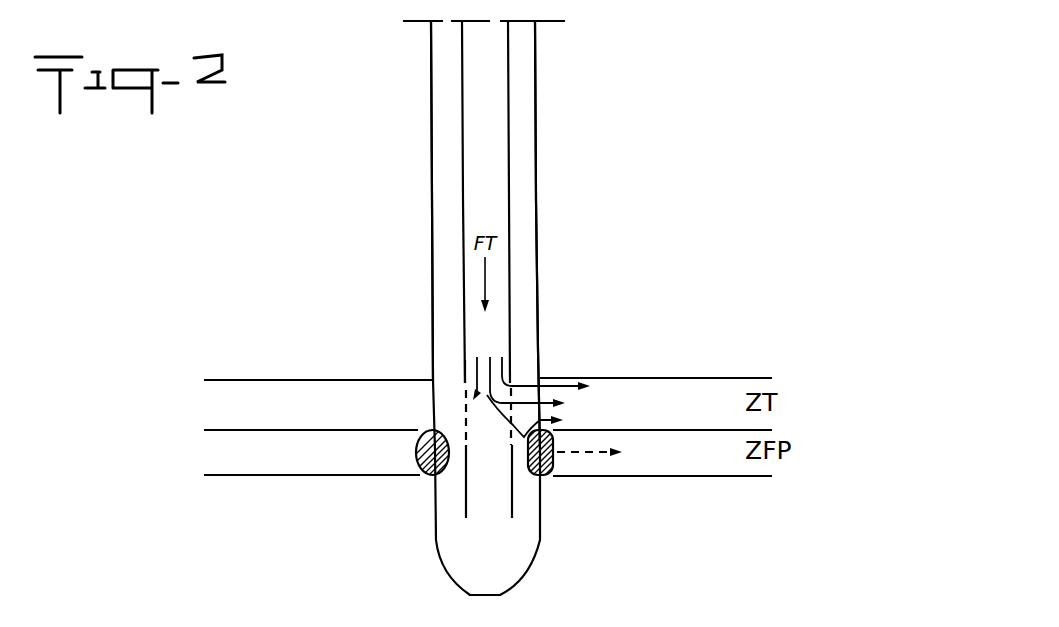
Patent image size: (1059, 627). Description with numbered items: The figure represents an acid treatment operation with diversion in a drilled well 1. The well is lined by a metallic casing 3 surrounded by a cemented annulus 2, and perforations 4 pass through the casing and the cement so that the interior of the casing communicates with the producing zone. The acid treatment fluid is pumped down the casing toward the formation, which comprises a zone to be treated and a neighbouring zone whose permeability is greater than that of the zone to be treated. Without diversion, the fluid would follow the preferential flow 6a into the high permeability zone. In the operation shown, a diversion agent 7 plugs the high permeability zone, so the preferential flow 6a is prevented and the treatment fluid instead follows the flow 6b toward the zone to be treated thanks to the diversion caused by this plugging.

The drilled well 1 is at (416, 209).
The cemented annulus 2 is at (521, 113).
The metallic casing 3 is at (509, 188).
The perforations through the casing and the cement 4 is at (465, 383).
The preferential flow of the treatment fluid 6a is at (606, 453).
The flow of the treatment fluid towards the zone to be treated 6b is at (550, 397).
The diversion agent 7 is at (400, 480).